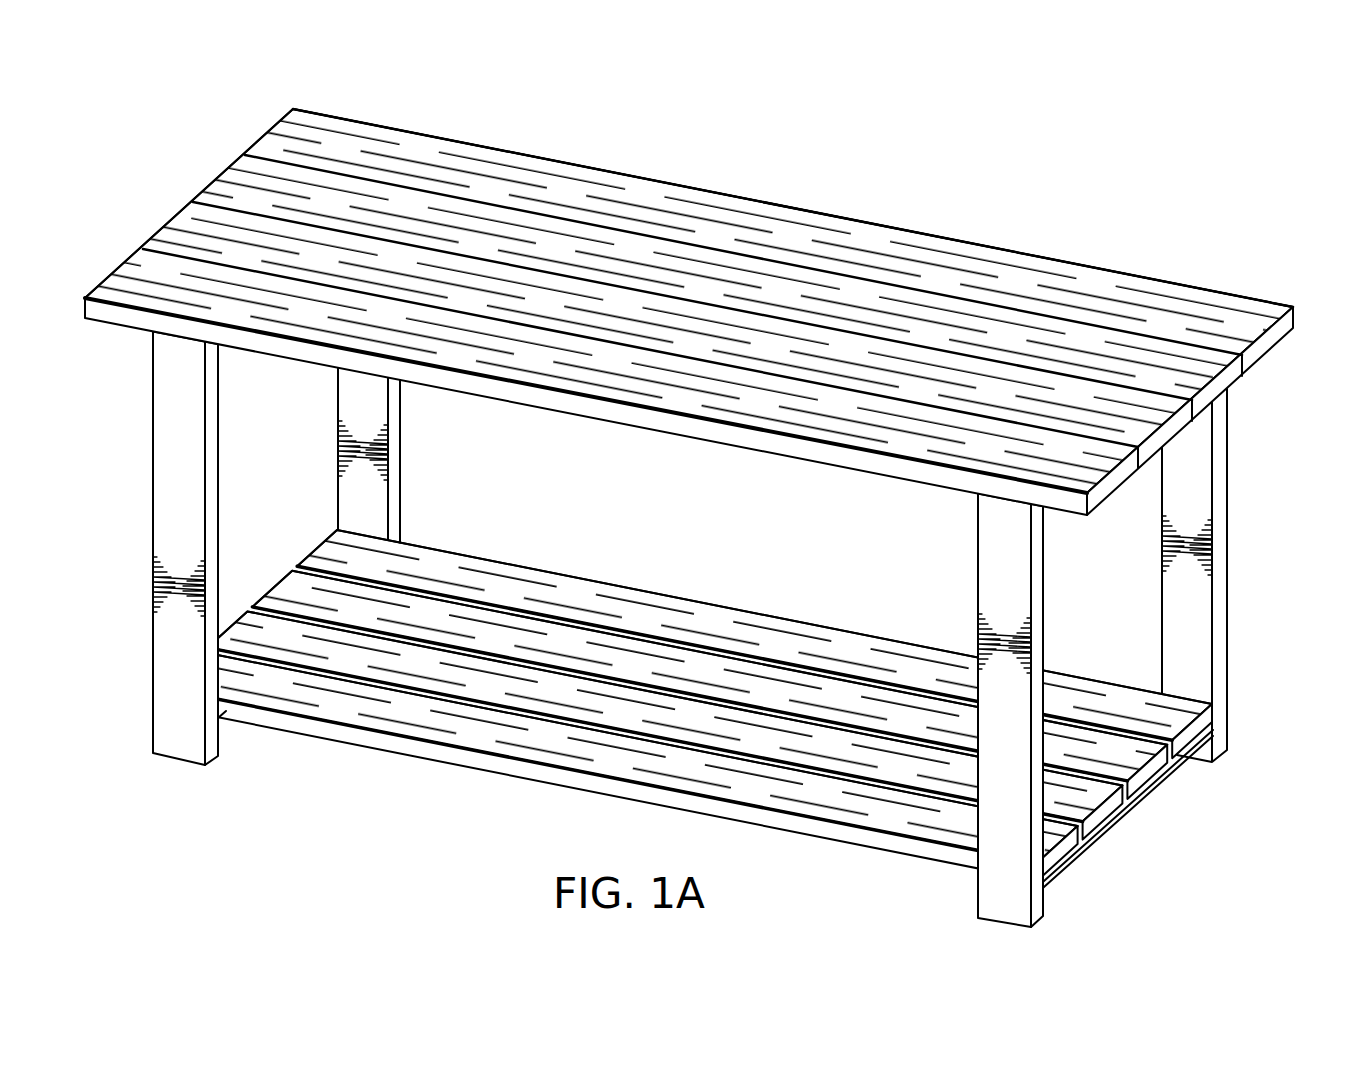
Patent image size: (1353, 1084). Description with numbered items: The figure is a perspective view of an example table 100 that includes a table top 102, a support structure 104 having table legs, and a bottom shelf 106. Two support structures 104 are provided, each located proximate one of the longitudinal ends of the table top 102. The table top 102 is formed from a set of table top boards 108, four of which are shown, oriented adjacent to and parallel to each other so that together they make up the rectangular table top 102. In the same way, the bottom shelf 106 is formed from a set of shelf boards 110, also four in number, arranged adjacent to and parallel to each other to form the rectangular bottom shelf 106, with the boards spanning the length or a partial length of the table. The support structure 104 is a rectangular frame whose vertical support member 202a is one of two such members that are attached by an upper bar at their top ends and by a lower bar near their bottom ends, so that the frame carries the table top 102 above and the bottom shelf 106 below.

The table 100 is at (700, 498).
The table top 102 is at (681, 295).
The support structure 104 is at (742, 629).
The bottom shelf 106 is at (688, 698).
The table top boards 108 is at (279, 137).
The shelf boards 110 is at (328, 556).
The vertical support member 202a is at (989, 551).